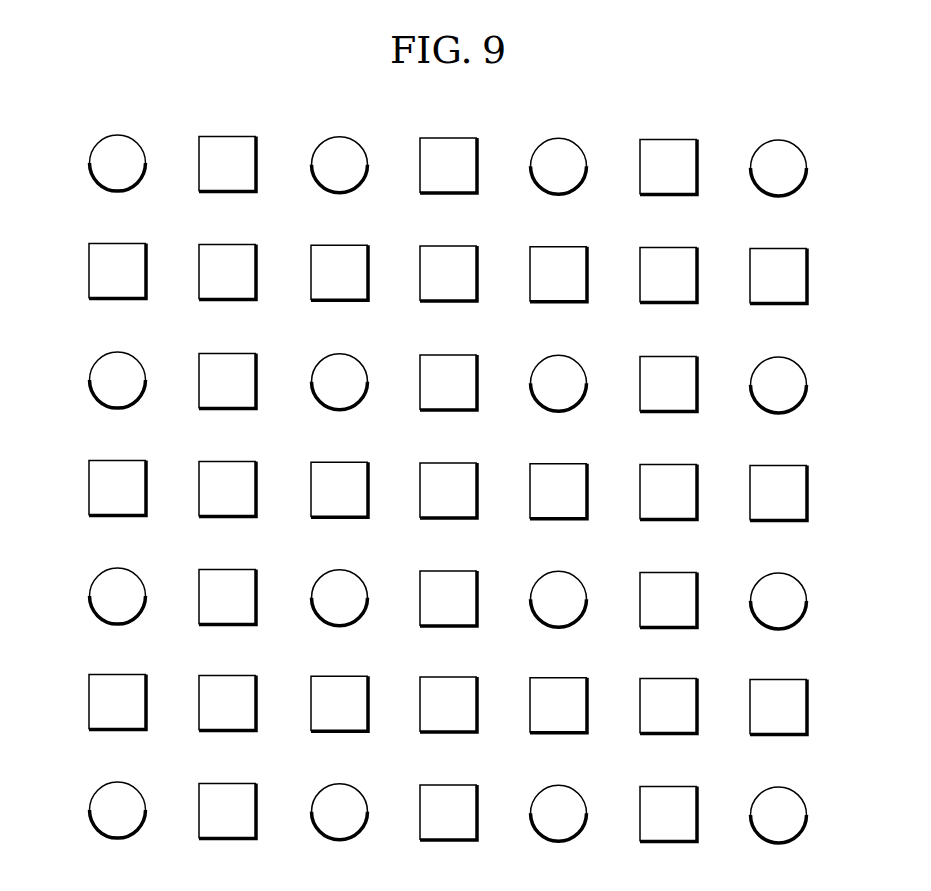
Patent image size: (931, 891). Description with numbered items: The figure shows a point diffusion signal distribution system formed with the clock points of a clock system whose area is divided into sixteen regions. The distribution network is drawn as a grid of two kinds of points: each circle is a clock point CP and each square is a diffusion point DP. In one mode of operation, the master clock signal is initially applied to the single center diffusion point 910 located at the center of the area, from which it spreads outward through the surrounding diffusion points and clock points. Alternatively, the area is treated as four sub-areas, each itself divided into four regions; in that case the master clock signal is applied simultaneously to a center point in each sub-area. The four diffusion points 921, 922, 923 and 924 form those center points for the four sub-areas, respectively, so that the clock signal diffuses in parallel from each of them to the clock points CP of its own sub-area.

The center diffusion point 910 is at (463, 463).
The diffusion point 921 is at (227, 243).
The diffusion point 922 is at (238, 674).
The diffusion point 923 is at (678, 678).
The diffusion point 924 is at (678, 250).
The clock point CP is at (783, 142).
The diffusion point DP is at (783, 251).